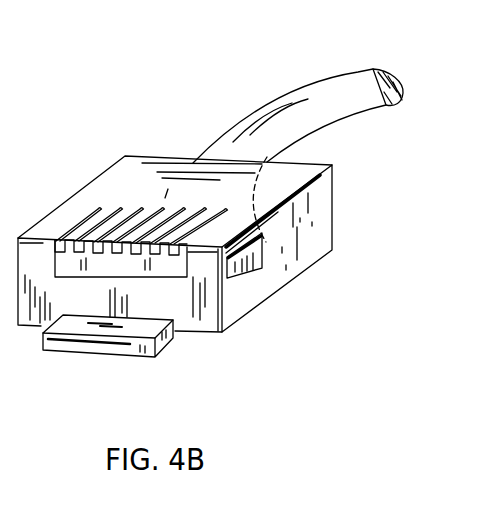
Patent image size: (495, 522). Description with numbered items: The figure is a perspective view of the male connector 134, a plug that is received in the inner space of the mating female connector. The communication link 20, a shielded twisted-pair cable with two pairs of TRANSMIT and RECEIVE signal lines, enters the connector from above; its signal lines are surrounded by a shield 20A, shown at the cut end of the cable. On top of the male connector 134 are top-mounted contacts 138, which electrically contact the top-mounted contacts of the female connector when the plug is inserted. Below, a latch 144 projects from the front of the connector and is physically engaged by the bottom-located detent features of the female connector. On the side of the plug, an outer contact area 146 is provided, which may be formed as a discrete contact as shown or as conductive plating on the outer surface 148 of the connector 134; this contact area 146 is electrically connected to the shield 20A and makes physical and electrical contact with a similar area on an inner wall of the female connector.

The communication link 20 is at (420, 70).
The shield 20A is at (353, 113).
The male connector 134 is at (378, 194).
The top-mounted contacts 138 is at (111, 212).
The latch 144 is at (172, 337).
The outer contact area 146 is at (258, 256).
The outer surface 148 is at (263, 290).